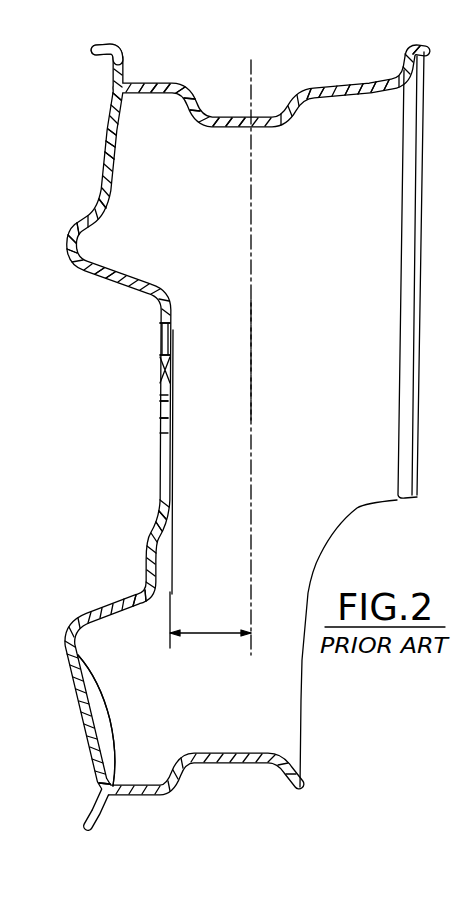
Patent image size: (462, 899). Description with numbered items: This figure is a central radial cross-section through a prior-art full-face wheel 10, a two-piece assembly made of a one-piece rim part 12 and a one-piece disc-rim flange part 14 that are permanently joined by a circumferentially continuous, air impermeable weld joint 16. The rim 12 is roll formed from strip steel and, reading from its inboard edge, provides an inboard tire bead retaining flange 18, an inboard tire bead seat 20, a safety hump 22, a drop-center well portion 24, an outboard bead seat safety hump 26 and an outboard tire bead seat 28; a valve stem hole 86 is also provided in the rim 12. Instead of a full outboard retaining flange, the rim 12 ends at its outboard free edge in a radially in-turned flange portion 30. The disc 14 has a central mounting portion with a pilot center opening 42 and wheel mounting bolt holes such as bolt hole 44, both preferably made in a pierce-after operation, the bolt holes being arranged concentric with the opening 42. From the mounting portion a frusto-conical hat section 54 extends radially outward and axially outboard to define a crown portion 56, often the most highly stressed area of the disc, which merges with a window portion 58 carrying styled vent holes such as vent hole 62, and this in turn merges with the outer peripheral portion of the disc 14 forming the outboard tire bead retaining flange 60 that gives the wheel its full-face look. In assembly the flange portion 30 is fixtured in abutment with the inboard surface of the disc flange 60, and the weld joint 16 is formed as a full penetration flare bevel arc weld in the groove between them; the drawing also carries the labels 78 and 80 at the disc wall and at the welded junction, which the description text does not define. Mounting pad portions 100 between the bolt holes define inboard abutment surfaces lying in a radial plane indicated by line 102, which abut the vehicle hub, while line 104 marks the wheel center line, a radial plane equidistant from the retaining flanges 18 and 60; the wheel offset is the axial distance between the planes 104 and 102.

The wheel 10 is at (60, 165).
The rim part 12 is at (320, 89).
The disc-rim flange part 14 is at (70, 223).
The weld joint 16 is at (121, 85).
The inboard tire bead retaining flange 18 is at (425, 52).
The inboard tire bead seat 20 is at (380, 82).
The safety hump 22 is at (356, 85).
The drop-center well portion 24 is at (235, 130).
The outboard bead seat safety hump 26 is at (178, 81).
The outboard tire bead seat 28 is at (155, 95).
The radially in-turned flange portion 30 is at (112, 784).
The pilot center opening 42 is at (158, 410).
The wheel mounting bolt hole 44 is at (157, 338).
The hat section 54 is at (118, 287).
The crown portion 56 is at (72, 256).
The window portion 58 is at (112, 135).
The outboard tire bead retaining flange 60 is at (101, 75).
The styled vent hole 62 is at (117, 157).
The side wall 78 is at (103, 210).
The weld 80 is at (109, 98).
The valve stem hole 86 is at (193, 100).
The mounting pad portion 100 is at (172, 524).
The radial plane line 102 is at (173, 602).
The center line 104 is at (252, 375).